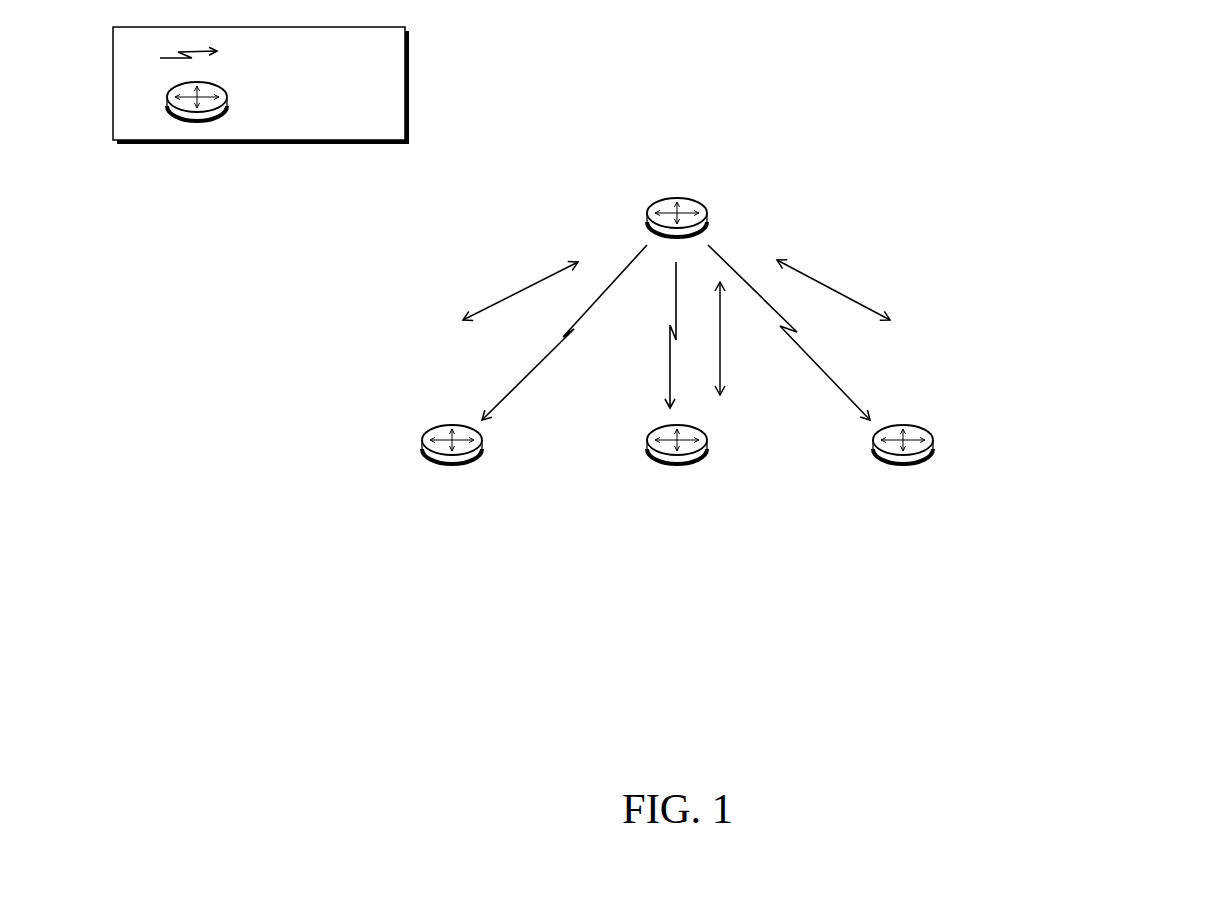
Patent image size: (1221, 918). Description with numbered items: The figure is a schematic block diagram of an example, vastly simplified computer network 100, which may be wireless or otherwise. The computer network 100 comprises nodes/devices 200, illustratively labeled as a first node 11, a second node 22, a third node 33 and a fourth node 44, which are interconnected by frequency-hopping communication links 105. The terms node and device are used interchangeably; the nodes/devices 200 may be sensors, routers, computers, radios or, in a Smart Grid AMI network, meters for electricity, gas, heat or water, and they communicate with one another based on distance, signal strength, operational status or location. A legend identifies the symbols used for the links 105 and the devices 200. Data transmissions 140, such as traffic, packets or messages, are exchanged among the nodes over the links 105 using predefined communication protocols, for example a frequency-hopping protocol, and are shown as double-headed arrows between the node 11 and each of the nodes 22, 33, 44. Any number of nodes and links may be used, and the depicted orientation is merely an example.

The computer network 100 is at (1143, 83).
The frequency-hopping communication links 105 is at (258, 54).
The nodes/devices 200 is at (270, 101).
The node 11 is at (670, 206).
The node 22 is at (452, 460).
The node 33 is at (677, 460).
The node 44 is at (903, 460).
The data transmissions 140 is at (507, 302).